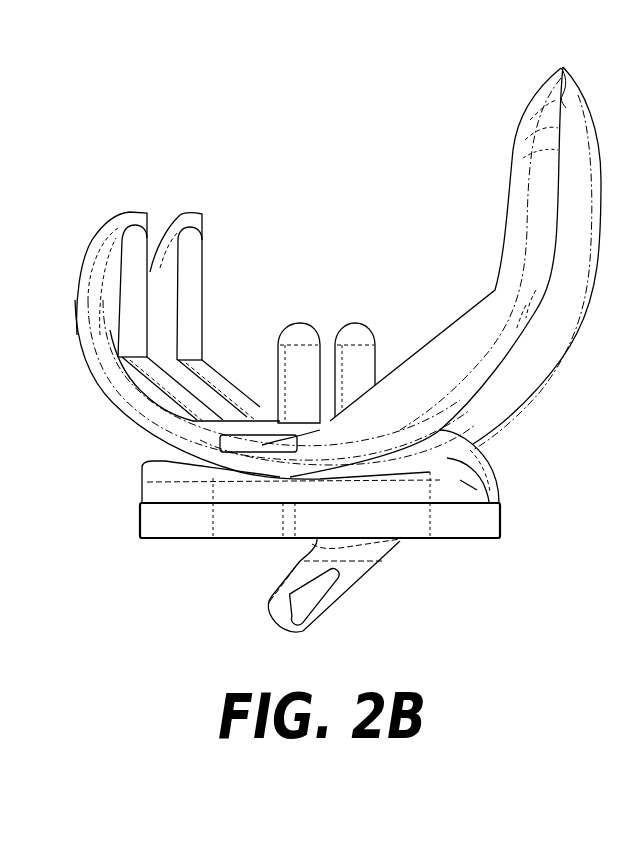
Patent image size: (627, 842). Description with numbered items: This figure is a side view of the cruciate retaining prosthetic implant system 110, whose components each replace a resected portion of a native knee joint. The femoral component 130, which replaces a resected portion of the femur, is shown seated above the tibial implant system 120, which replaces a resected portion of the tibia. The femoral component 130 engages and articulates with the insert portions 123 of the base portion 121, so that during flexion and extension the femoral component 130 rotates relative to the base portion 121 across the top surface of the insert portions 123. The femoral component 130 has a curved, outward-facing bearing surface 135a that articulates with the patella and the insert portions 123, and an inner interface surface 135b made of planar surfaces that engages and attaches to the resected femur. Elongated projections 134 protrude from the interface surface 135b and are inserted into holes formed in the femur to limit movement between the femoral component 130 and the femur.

The prosthetic implant system 110 is at (216, 131).
The femoral component 130 is at (556, 69).
The bearing surface 135a is at (126, 402).
The interface surface 135b is at (240, 375).
The elongated projections 134 is at (355, 327).
The tibial implant system 120 is at (493, 582).
The insert portions 123 is at (153, 490).
The base portion 121 is at (190, 523).